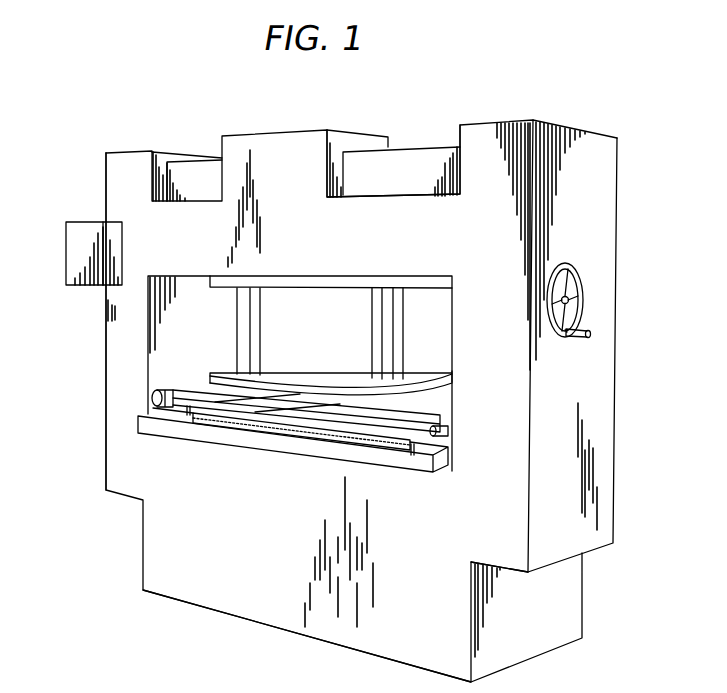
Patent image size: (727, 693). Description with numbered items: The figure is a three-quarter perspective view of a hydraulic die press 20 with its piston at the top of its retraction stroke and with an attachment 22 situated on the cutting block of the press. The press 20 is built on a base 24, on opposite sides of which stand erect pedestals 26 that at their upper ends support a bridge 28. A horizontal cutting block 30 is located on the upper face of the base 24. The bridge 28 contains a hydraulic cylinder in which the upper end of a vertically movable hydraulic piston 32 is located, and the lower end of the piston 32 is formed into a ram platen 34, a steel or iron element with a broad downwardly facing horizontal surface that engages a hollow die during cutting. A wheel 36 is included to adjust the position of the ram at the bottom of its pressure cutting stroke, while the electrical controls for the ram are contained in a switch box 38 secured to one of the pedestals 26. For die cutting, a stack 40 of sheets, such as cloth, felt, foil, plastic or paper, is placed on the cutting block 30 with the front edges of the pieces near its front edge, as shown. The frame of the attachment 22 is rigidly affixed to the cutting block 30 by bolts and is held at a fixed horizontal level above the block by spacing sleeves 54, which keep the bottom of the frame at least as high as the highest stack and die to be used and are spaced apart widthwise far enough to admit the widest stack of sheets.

The die press 20 is at (604, 88).
The attachment 22 is at (178, 380).
The base 24 is at (225, 612).
The pedestals 26 is at (106, 387).
The bridge 28 is at (388, 205).
The cutting block 30 is at (436, 468).
The hydraulic piston 32 is at (370, 305).
The ram platen 34 is at (378, 382).
The wheel 36 is at (583, 288).
The switch box 38 is at (76, 228).
The stack of sheets 40 is at (340, 445).
The spacing sleeves 54 is at (445, 444).